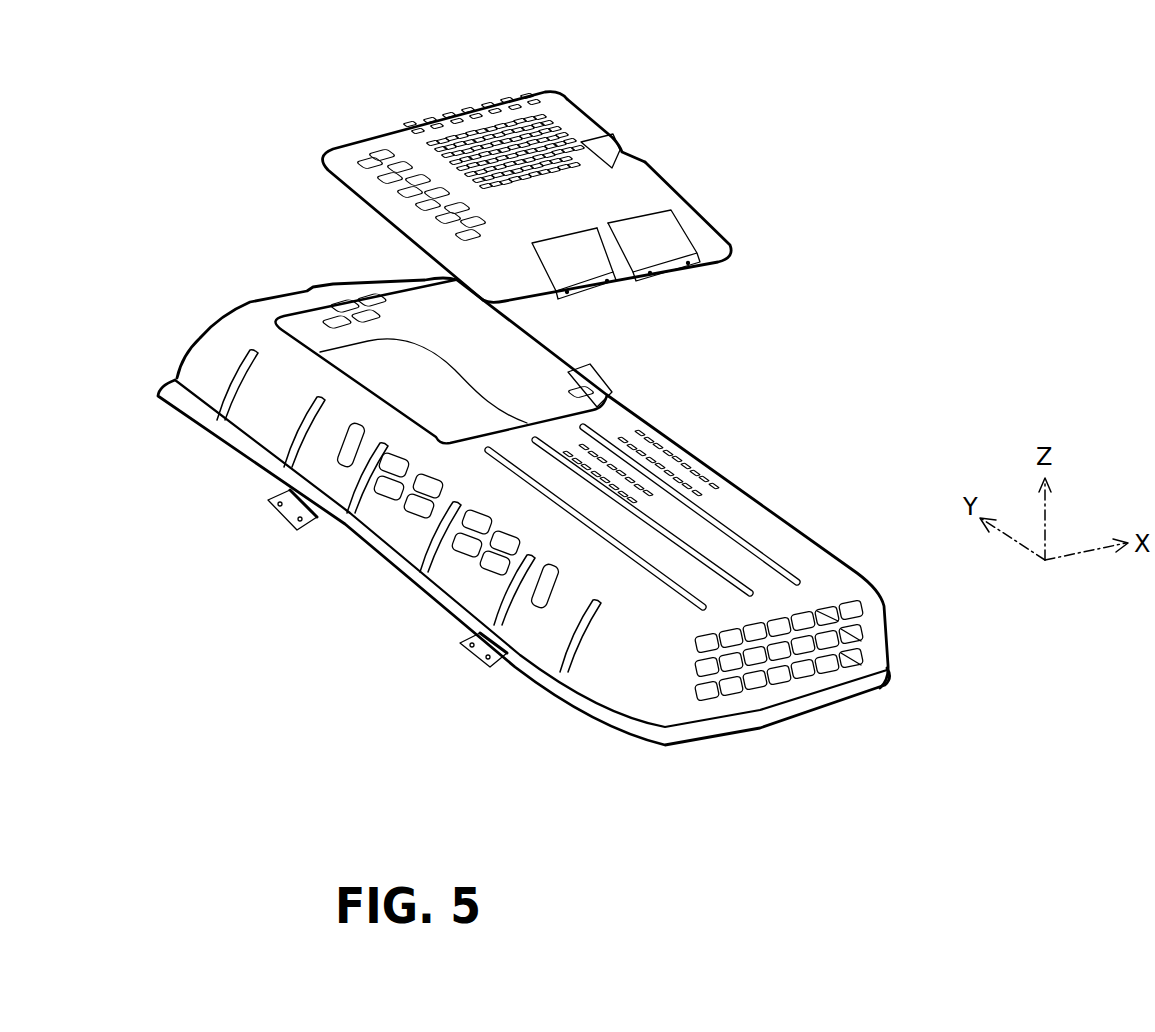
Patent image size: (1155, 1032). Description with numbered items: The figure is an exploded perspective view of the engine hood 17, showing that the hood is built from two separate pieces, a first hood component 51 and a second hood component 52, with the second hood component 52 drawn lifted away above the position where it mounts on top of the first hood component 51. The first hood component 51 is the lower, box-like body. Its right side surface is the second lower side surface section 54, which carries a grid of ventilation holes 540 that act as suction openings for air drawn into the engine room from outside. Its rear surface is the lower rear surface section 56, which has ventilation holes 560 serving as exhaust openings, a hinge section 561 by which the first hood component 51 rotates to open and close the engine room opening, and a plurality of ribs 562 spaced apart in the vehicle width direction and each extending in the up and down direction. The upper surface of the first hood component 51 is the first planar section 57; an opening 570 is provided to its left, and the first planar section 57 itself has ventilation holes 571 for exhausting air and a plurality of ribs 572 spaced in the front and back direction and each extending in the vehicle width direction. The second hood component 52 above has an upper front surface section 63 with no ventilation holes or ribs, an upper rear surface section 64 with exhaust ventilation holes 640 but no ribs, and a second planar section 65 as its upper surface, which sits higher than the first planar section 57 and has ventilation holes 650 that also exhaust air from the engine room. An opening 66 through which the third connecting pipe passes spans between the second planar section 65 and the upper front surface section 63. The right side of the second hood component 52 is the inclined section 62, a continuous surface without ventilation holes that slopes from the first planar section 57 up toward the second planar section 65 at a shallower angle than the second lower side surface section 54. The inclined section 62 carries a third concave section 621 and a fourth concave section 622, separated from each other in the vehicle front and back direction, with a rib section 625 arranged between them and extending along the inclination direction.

The engine hood 17 is at (800, 214).
The first hood component 51 is at (741, 509).
The second hood component 52 is at (564, 144).
The second lower side surface section 54 is at (760, 695).
The ventilation holes 540 is at (821, 665).
The lower rear surface section 56 is at (393, 530).
The ventilation holes 560 is at (461, 543).
The hinge section 561 is at (270, 505).
The ribs 562 is at (330, 500).
The first planar section 57 is at (745, 572).
The opening 570 is at (530, 378).
The ventilation holes 571 is at (640, 475).
The ribs 572 is at (647, 598).
The inclined section 62 is at (697, 224).
The third concave section 621 is at (578, 250).
The fourth concave section 622 is at (663, 242).
The rib section 625 is at (624, 255).
The upper front surface section 63 is at (601, 121).
The upper rear surface section 64 is at (383, 198).
The ventilation holes 640 is at (371, 168).
The second planar section 65 is at (520, 117).
The ventilation holes 650 is at (483, 140).
The opening 66 is at (622, 155).